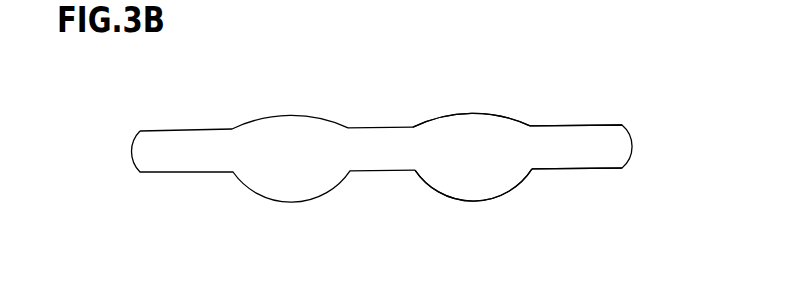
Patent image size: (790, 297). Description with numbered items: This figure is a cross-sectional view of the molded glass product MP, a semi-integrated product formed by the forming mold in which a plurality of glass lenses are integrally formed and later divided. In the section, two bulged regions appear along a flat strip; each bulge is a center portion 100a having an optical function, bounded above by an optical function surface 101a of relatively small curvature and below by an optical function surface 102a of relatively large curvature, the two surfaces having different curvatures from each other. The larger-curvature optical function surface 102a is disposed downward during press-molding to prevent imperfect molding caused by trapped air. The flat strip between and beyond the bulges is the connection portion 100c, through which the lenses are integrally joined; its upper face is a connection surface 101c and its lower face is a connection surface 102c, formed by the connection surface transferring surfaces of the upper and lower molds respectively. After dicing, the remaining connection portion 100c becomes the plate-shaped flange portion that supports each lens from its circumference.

The center portion 100a is at (458, 182).
The optical function surface 101a is at (473, 115).
The optical function surface 102a is at (495, 202).
The connection portion 100c is at (615, 148).
The connection surface 101c is at (590, 124).
The connection surface 102c is at (590, 169).
The molded glass product MP is at (605, 77).